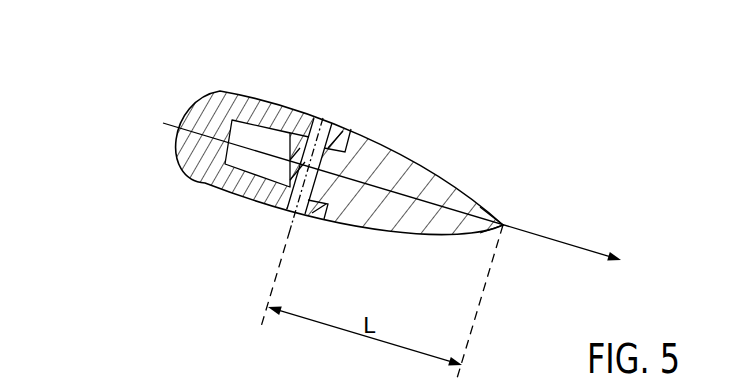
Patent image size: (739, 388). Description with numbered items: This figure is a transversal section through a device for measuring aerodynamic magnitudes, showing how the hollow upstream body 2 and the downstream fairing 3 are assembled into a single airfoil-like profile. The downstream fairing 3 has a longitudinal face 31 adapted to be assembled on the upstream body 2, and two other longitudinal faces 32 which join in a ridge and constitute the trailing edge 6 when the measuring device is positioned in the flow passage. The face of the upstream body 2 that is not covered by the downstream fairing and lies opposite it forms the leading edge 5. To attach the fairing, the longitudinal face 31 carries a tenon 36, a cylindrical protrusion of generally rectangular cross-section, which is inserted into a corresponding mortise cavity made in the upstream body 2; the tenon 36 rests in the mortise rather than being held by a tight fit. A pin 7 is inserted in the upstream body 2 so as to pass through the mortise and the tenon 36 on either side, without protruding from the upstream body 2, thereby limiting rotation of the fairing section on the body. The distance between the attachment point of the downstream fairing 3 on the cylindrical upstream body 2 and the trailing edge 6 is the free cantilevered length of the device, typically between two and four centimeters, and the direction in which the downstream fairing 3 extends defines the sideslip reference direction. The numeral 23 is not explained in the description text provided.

The hollow upstream body 2 is at (268, 103).
The downstream fairing 3 is at (407, 157).
The leading edge 5 is at (158, 107).
The trailing edge 6 is at (511, 215).
The pin 7 is at (330, 122).
The nut recess 23 is at (346, 164).
The longitudinal face 31 is at (236, 167).
The longitudinal faces 32 is at (468, 176).
The tenon 36 is at (283, 170).